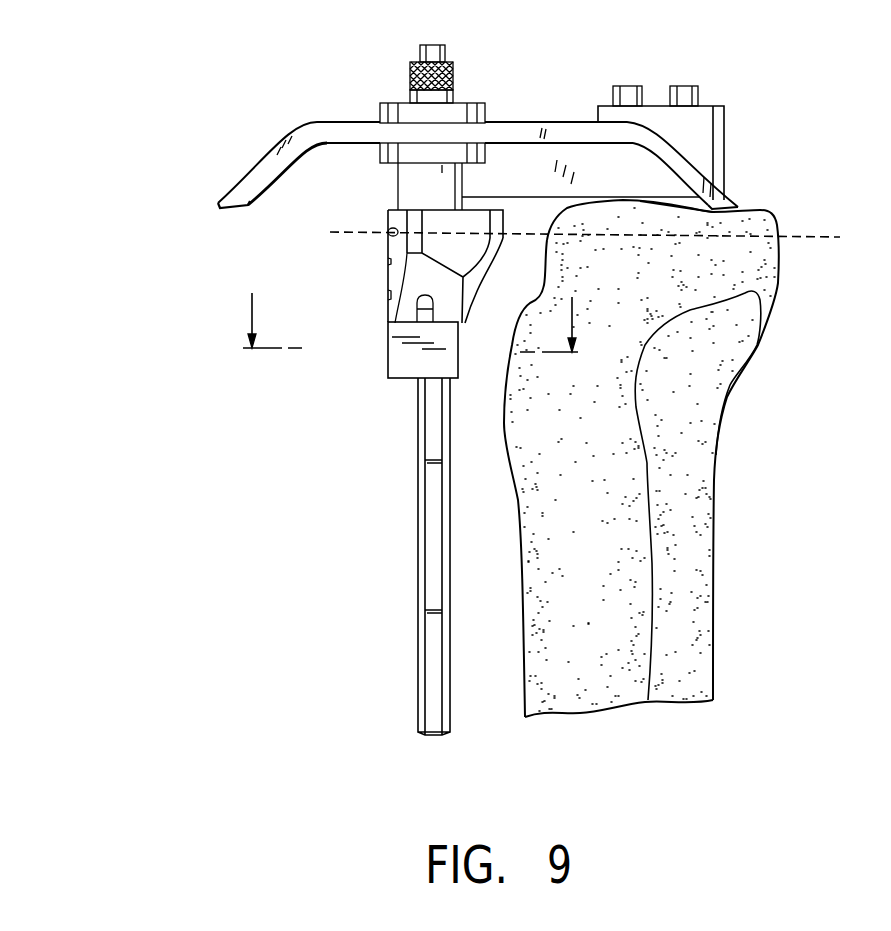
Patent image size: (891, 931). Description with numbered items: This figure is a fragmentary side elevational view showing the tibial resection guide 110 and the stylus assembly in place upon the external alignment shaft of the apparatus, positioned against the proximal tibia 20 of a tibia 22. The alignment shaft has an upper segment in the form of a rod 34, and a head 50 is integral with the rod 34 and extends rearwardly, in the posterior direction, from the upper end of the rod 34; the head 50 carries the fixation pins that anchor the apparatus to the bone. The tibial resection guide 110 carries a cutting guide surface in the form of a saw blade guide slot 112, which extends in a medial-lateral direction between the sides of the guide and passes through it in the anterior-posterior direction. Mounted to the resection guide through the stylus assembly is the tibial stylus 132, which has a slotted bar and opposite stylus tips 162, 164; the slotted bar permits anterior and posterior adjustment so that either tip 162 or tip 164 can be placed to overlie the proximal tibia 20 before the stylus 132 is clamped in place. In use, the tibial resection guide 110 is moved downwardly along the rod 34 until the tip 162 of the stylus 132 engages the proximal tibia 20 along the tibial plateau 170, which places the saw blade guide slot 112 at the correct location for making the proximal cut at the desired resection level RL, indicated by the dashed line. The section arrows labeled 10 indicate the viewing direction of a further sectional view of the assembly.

The section line for view of FIG. 10 is at (413, 302).
The proximal tibia 20 is at (778, 225).
The tibia 22 is at (583, 694).
The rod 34 is at (432, 545).
The head 50 is at (716, 106).
The tibial resection guide 110 is at (388, 247).
The saw blade guide slot 112 is at (393, 228).
The tibial stylus 132 is at (552, 121).
The stylus tip 162 is at (720, 213).
The stylus tip 164 is at (226, 205).
The tibial plateau 170 is at (745, 208).
The resection level RL is at (815, 238).